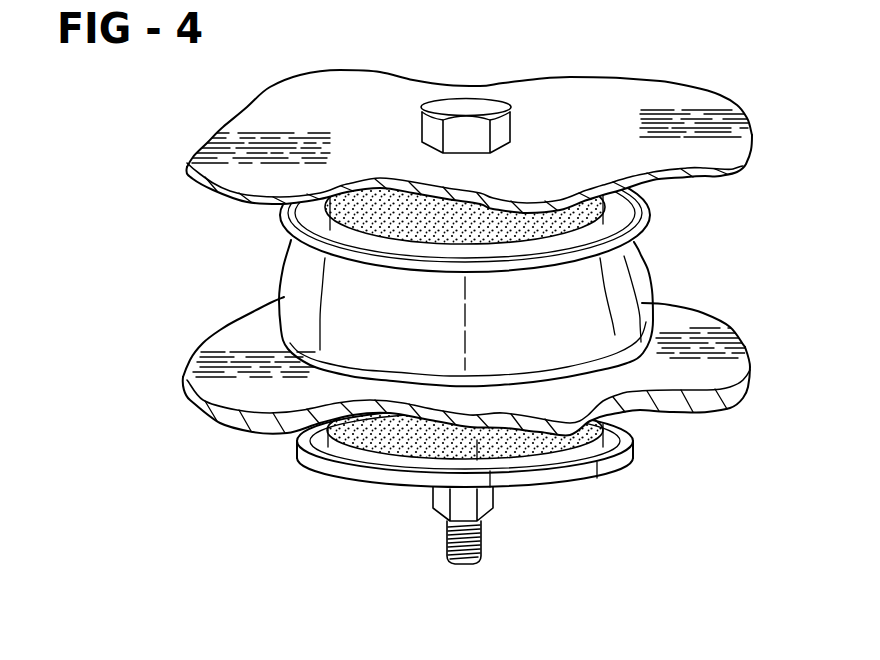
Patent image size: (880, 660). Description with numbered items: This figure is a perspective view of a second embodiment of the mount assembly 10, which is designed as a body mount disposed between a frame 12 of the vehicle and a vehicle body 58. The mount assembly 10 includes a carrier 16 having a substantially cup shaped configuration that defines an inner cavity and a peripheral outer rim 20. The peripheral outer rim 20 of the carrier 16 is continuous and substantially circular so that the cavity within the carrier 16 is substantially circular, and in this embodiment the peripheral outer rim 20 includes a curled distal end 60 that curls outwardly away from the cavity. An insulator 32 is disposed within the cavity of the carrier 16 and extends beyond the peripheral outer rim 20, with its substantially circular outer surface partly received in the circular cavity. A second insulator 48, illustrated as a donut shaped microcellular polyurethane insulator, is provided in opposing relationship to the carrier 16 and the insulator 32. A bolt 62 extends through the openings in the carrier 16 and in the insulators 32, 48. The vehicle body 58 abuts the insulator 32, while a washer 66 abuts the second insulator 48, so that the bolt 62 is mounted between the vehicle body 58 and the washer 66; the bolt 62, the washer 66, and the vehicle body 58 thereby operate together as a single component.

The mount assembly 10 is at (172, 299).
The frame 12 is at (720, 369).
The carrier 16 is at (650, 300).
The peripheral outer rim 20 is at (645, 200).
The insulator 32 is at (549, 223).
The second insulator 48 is at (418, 452).
The vehicle body 58 is at (667, 92).
The curled distal end 60 is at (290, 220).
The bolt 62 is at (463, 133).
The washer 66 is at (552, 472).